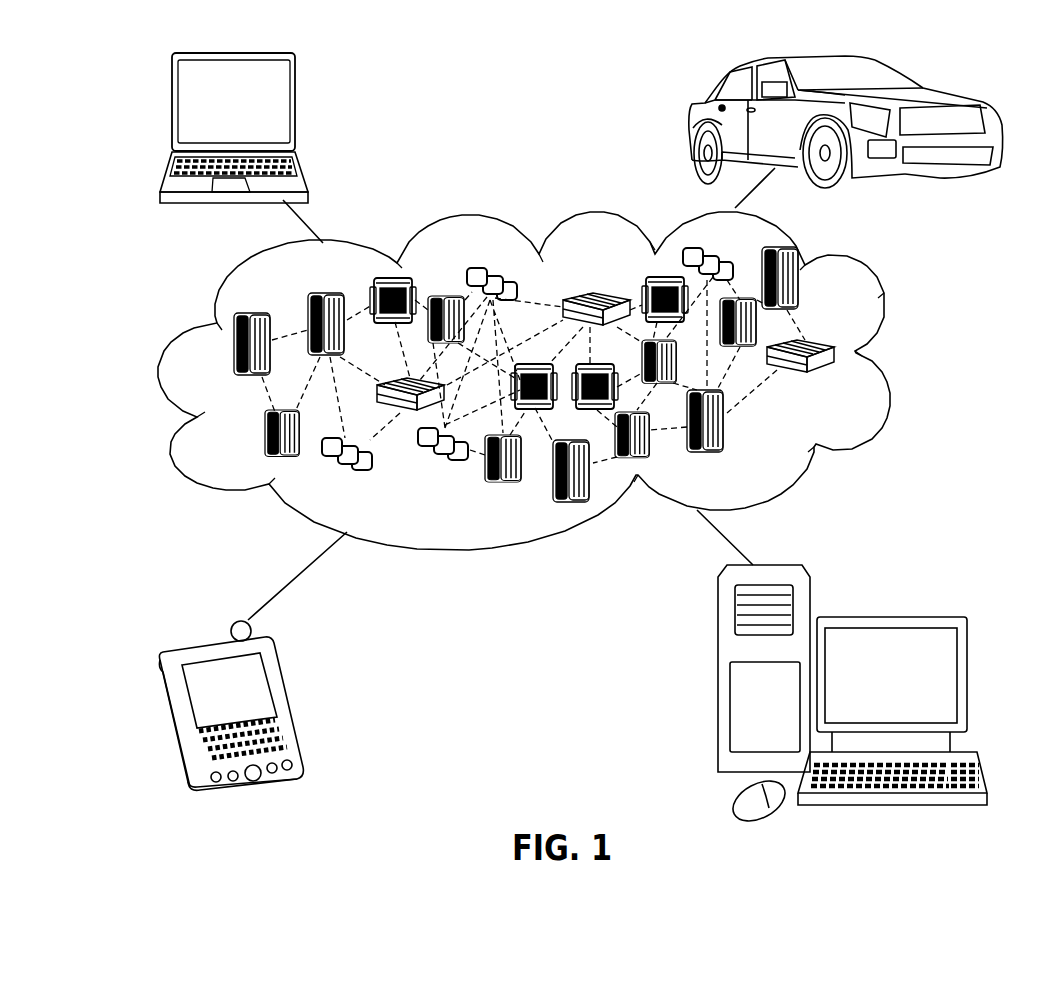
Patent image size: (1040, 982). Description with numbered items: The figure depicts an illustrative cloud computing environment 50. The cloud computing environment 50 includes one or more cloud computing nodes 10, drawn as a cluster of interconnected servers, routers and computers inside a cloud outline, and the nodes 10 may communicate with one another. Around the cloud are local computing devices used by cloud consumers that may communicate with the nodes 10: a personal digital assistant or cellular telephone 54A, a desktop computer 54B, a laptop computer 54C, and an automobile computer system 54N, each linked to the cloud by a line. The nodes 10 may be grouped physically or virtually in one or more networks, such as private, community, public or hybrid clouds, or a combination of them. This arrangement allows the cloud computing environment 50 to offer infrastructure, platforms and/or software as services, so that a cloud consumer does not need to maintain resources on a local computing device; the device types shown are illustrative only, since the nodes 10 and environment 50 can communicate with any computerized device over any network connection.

The cloud computing nodes 10 is at (836, 383).
The cloud computing environment 50 is at (887, 352).
The personal digital assistant (PDA) or cellular telephone 54A is at (288, 702).
The desktop computer 54B is at (890, 614).
The laptop computer 54C is at (297, 108).
The automobile computer system 54N is at (692, 122).